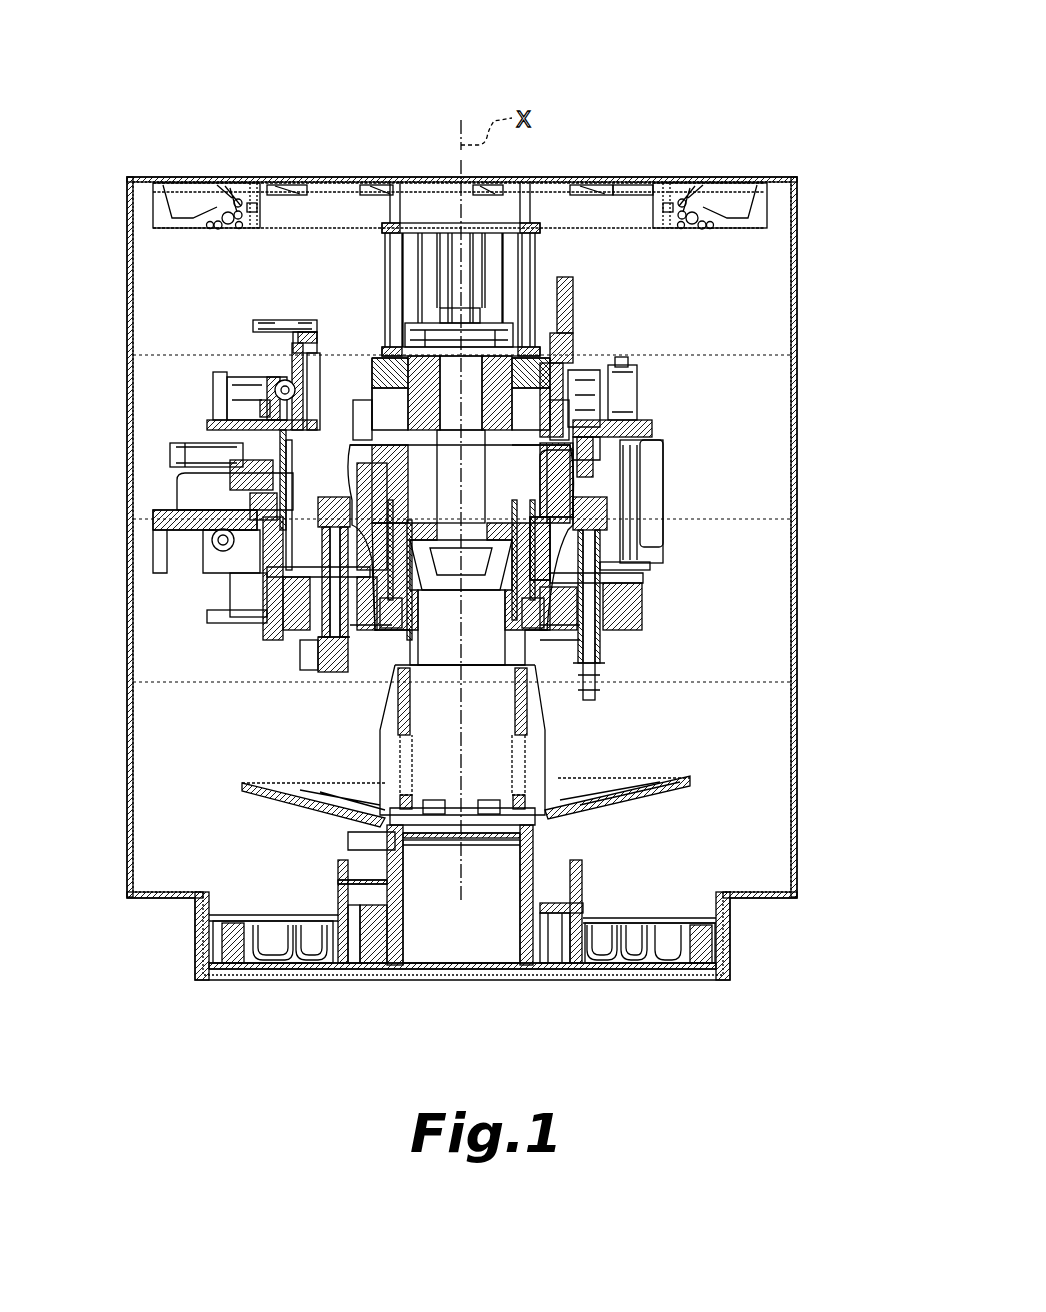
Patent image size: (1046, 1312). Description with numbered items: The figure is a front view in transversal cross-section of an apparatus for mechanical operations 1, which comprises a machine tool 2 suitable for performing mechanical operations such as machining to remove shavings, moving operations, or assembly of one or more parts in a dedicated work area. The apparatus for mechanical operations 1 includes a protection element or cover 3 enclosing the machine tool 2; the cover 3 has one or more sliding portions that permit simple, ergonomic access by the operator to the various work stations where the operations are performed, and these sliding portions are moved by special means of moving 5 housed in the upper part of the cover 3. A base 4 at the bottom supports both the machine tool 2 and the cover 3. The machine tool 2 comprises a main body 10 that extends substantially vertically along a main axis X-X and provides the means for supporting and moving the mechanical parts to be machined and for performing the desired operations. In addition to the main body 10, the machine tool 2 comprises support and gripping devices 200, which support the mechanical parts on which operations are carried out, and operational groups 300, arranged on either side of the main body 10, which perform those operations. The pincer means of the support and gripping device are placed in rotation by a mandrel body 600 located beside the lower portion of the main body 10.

The apparatus for mechanical operations 1 is at (228, 1037).
The machine tool 2 is at (560, 733).
The cover 3 is at (794, 386).
The base 4 is at (552, 873).
The means of moving 5 is at (718, 197).
The main body 10 is at (527, 340).
The support and gripping device 200 is at (346, 478).
The operational groups 300 is at (263, 352).
The mandrel body 600 is at (305, 658).